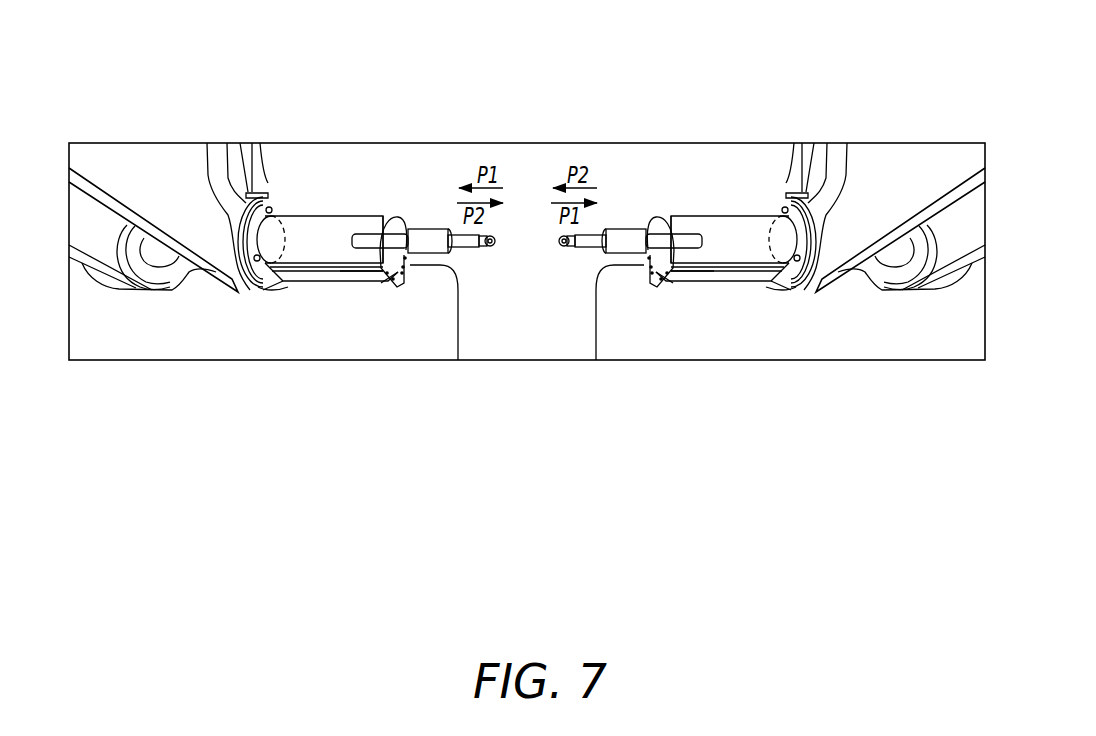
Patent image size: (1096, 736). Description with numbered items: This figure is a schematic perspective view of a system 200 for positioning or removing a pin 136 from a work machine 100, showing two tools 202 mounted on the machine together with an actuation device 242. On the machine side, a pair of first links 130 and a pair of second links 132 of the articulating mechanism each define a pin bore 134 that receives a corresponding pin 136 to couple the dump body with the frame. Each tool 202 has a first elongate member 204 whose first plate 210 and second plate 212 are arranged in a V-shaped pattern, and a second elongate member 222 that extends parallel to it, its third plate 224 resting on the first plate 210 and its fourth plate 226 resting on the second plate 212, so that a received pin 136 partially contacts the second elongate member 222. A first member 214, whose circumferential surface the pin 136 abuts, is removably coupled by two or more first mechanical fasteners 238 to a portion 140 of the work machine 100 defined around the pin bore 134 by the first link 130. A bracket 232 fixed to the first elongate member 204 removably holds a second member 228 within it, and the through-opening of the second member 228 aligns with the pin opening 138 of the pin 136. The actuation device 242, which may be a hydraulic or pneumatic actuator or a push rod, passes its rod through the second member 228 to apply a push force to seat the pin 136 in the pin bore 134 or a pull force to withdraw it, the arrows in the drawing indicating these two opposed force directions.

The work machine 100 is at (923, 315).
The first links 130 is at (87, 212).
The second links 132 is at (967, 212).
The pin bore 134 is at (250, 246).
The pin 136 is at (331, 243).
The pin opening 138 is at (371, 238).
The portion 140 is at (248, 150).
The system 200 is at (432, 217).
The tool 202 is at (331, 185).
The first elongate member 204 is at (301, 288).
The first plate 210 is at (356, 267).
The second plate 212 is at (698, 267).
The first member 214 is at (283, 287).
The second elongate member 222 is at (316, 270).
The third plate 224 is at (373, 286).
The fourth plate 226 is at (681, 286).
The second member 228 is at (458, 360).
The bracket 232 is at (383, 294).
The first mechanical fasteners 238 is at (271, 205).
The actuation device 242 is at (589, 243).